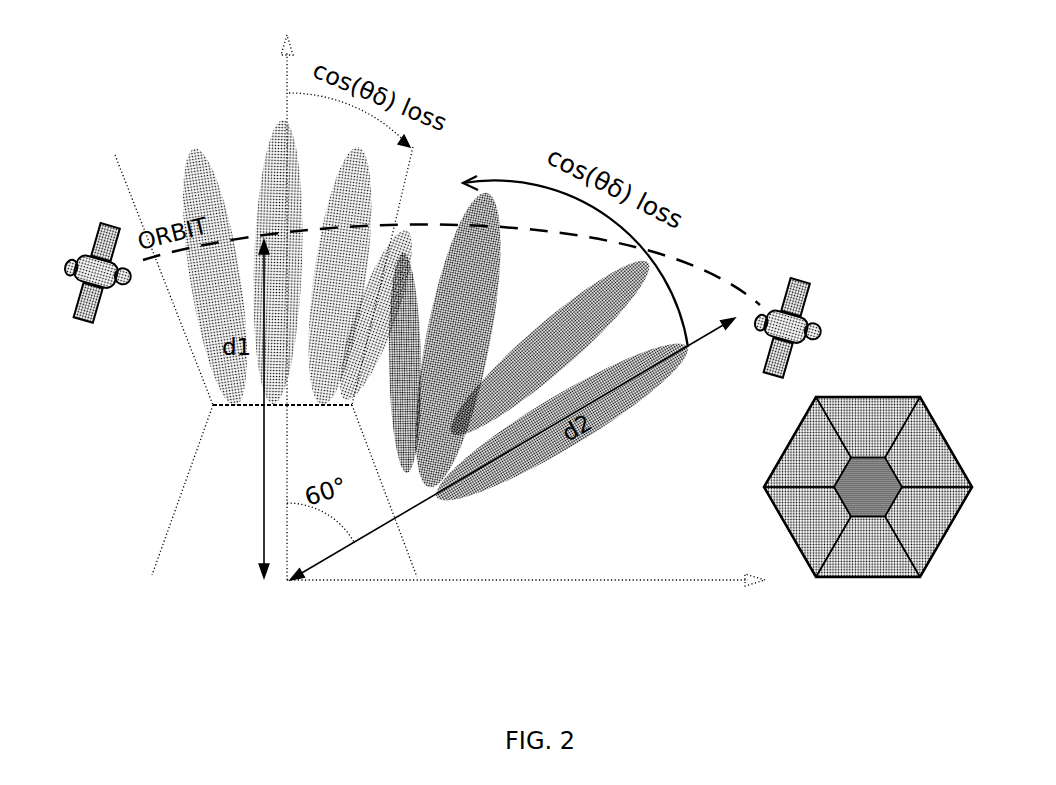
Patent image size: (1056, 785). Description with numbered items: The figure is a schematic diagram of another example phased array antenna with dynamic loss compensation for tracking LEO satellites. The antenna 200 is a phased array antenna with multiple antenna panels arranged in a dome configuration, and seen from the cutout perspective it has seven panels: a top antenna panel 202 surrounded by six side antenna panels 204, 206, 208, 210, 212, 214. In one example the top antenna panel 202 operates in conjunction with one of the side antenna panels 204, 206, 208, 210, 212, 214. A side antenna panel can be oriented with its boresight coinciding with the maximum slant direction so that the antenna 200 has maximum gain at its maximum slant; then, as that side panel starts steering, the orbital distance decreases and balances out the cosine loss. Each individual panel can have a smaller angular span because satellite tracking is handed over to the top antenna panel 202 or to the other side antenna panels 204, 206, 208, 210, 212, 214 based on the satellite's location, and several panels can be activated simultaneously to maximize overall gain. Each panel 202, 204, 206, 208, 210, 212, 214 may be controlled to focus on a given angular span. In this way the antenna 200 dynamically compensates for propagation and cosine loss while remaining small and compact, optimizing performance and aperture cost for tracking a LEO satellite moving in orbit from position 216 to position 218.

The antenna 200 is at (907, 232).
The top antenna panel 202 is at (895, 493).
The side antenna panel 204 is at (867, 417).
The side antenna panel 206 is at (922, 452).
The side antenna panel 208 is at (920, 542).
The side antenna panel 210 is at (855, 553).
The side antenna panel 212 is at (808, 515).
The side antenna panel 214 is at (817, 457).
The position 216 is at (100, 240).
The position 218 is at (788, 297).